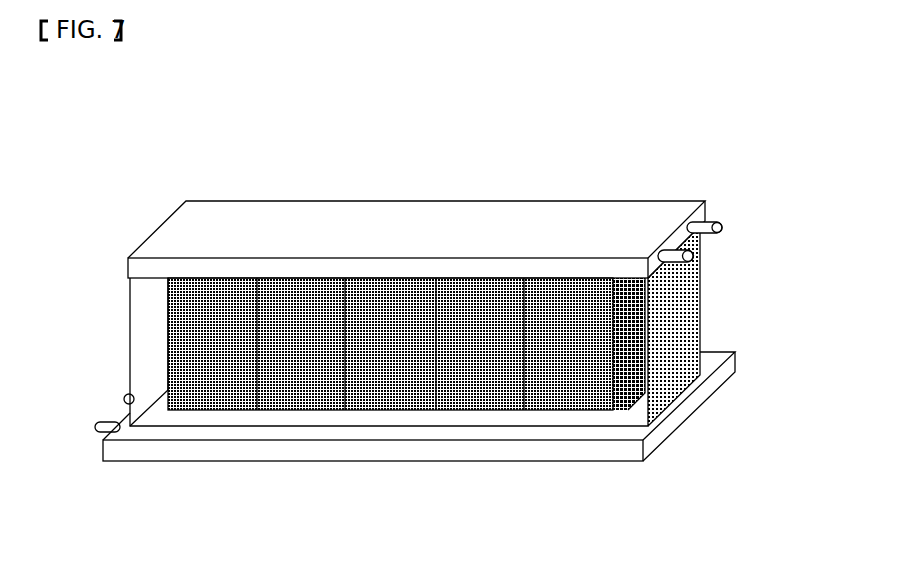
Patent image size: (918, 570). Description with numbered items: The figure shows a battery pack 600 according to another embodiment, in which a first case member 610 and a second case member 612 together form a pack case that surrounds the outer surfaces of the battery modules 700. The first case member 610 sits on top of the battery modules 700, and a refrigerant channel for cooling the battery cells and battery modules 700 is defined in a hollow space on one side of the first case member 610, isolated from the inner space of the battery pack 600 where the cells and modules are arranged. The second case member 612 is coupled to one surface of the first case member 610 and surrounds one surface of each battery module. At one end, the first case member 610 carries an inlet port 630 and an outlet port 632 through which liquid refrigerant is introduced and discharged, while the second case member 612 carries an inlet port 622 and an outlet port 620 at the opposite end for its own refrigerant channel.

The battery pack 600 is at (96, 112).
The first case member 610 is at (405, 200).
The second case member 612 is at (162, 462).
The outlet port 620 is at (95, 428).
The inlet port 622 is at (124, 397).
The inlet port 630 is at (694, 256).
The outlet port 632 is at (722, 227).
The battery modules 700 is at (395, 411).